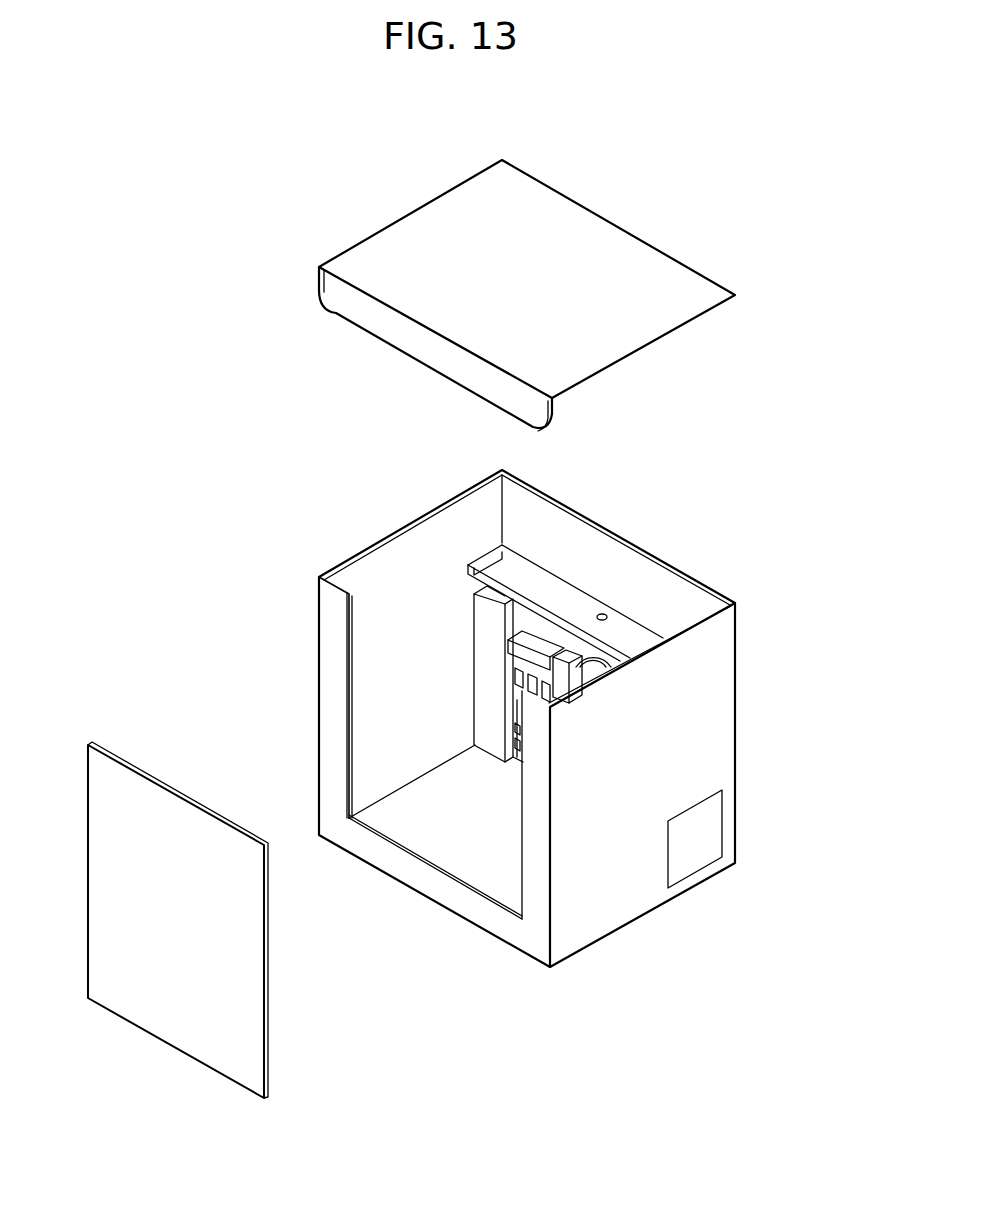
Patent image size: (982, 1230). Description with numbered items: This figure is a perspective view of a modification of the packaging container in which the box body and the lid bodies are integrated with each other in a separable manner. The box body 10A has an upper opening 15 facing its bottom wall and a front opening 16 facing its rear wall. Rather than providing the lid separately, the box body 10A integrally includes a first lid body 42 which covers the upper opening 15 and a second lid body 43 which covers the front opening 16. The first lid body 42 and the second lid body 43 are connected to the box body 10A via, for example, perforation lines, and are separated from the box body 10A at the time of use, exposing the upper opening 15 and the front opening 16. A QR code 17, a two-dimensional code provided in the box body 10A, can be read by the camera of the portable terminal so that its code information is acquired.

The box body 10A is at (736, 714).
The upper opening 15 is at (412, 560).
The front opening 16 is at (375, 703).
The QR code 17 is at (693, 858).
The first lid body 42 is at (613, 249).
The second lid body 43 is at (173, 1008).